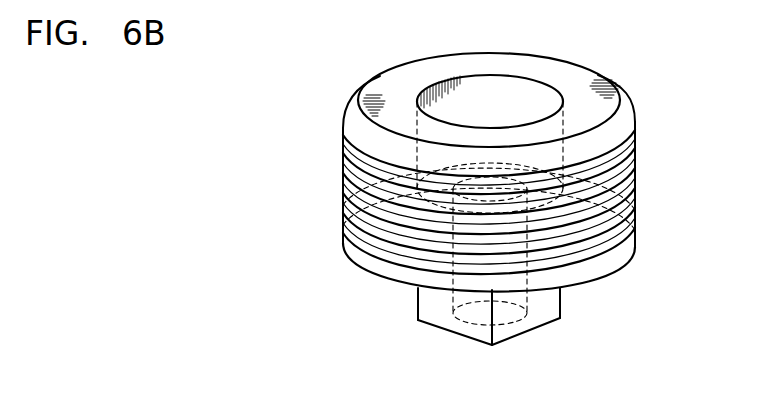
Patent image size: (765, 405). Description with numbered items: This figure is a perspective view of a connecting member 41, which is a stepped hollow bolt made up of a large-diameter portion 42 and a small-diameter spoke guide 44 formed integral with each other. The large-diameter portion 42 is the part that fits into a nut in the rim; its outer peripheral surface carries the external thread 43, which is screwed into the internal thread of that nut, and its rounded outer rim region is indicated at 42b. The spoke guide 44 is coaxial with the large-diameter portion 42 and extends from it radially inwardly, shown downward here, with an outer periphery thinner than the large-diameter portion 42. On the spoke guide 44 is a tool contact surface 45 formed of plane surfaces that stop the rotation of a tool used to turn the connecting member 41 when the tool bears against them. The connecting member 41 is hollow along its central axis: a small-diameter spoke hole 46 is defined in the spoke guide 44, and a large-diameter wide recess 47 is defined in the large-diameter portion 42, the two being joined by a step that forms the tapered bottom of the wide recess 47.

The connecting member 41 is at (345, 268).
The large-diameter portion 42 is at (392, 61).
The curved rim surface 42b is at (582, 73).
The external thread 43 is at (345, 175).
The spoke guide 44 is at (460, 336).
The tool contact surface 45 is at (418, 308).
The spoke hole 46 is at (517, 333).
The wide recess 47 is at (489, 127).